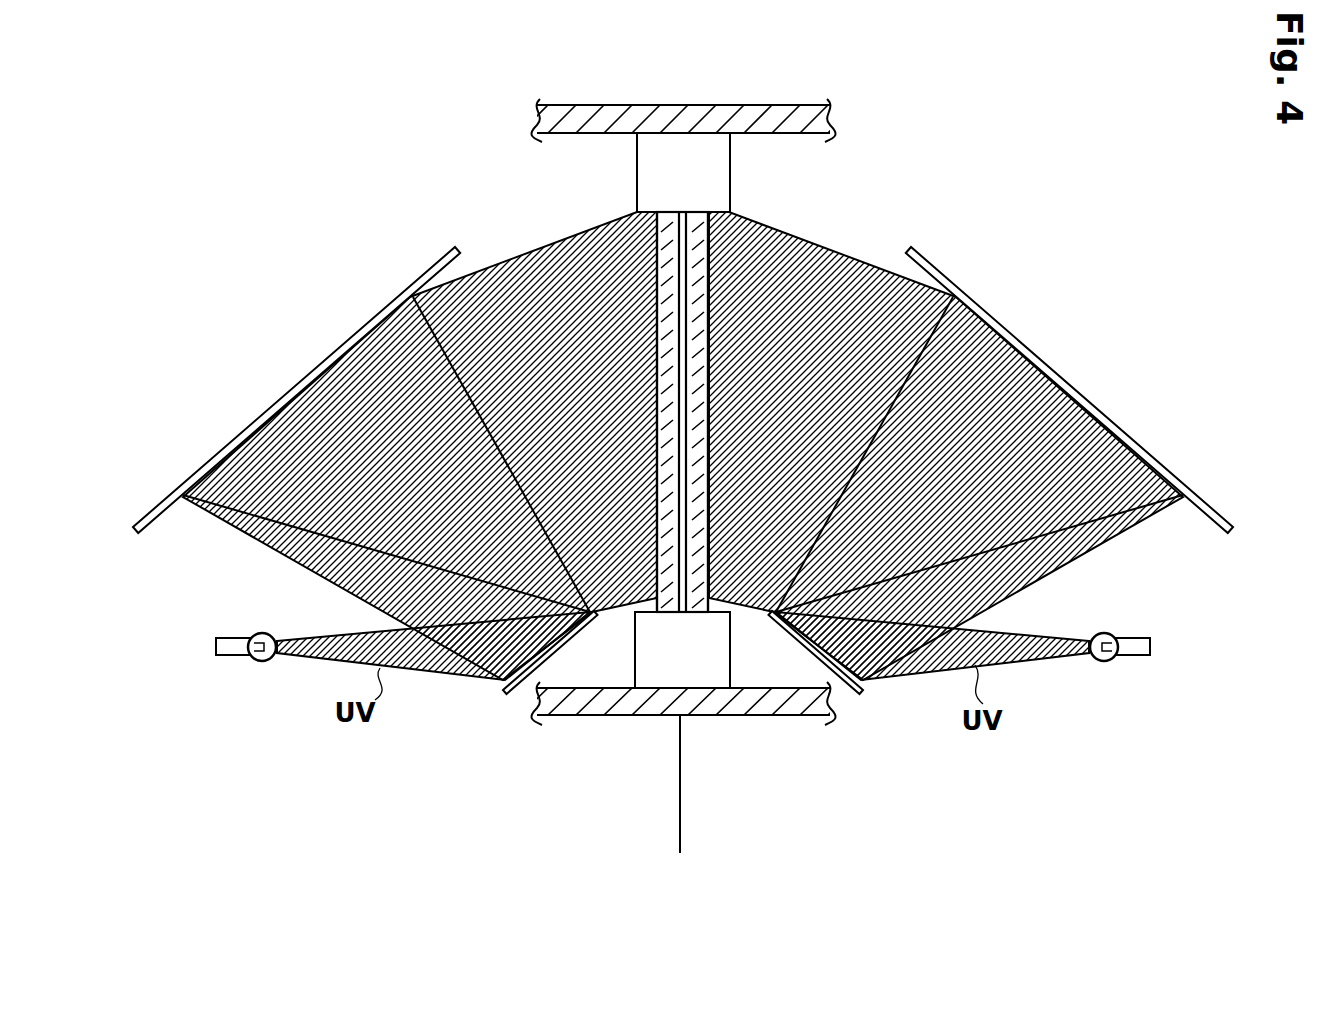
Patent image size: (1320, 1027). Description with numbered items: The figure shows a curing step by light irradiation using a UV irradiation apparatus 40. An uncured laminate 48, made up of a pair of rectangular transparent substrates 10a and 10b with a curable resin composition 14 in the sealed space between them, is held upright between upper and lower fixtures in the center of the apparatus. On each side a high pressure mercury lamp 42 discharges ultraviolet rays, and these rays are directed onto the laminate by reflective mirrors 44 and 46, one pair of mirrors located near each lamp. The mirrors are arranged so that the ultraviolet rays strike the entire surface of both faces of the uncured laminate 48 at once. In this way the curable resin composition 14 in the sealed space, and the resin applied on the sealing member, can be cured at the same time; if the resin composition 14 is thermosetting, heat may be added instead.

The transparent substrate 10a is at (652, 306).
The transparent substrate 10b is at (717, 348).
The curable resin composition 14 is at (709, 257).
The UV irradiation apparatus 40 is at (905, 192).
The high pressure mercury lamp 42 is at (251, 632).
The reflective mirror 44 is at (508, 697).
The reflective mirror 46 is at (340, 345).
The uncured laminate 48 is at (720, 287).